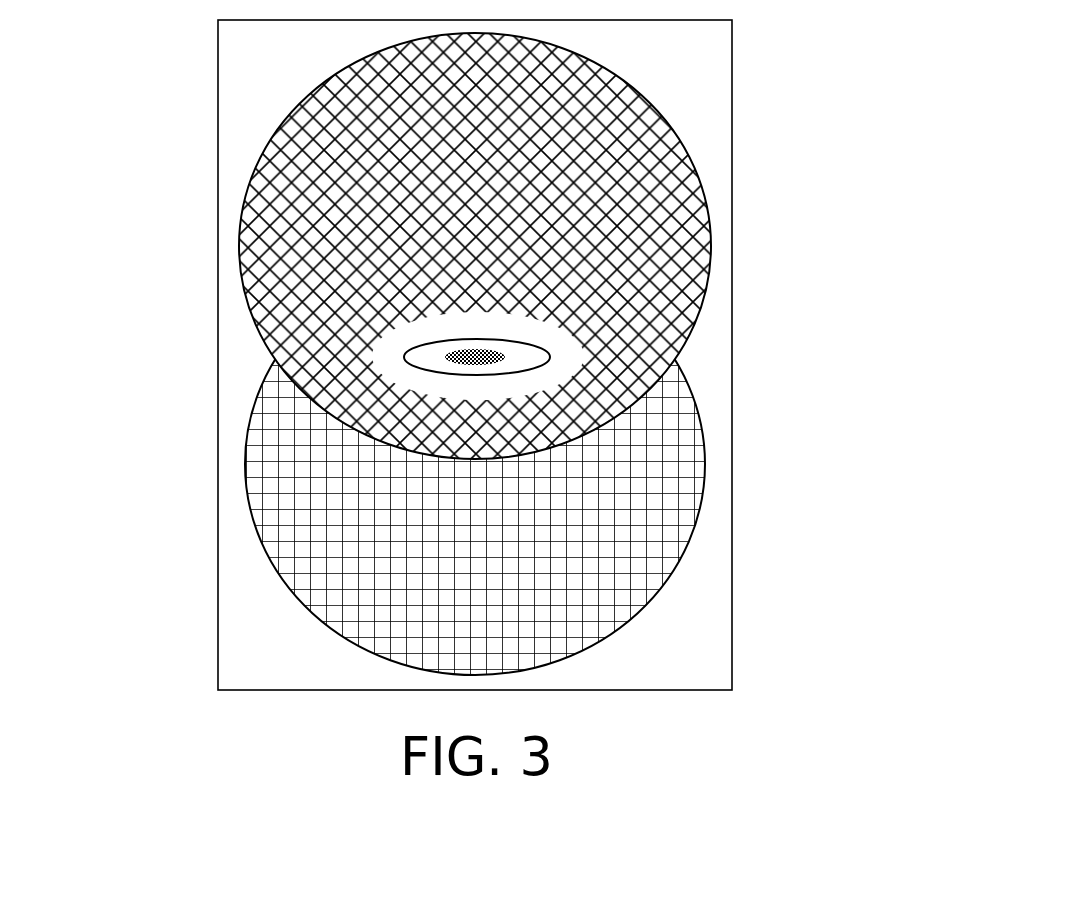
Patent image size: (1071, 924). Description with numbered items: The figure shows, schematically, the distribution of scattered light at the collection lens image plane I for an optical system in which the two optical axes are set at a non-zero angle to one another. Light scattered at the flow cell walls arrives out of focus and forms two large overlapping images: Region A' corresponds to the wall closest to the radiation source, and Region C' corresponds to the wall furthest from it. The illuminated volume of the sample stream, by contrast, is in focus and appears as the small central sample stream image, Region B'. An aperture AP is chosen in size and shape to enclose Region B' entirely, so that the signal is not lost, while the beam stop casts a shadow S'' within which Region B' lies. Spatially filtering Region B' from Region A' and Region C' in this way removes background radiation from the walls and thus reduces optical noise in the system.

The collection lens image plane I is at (703, 108).
The element Region C' is at (561, 246).
The aperture AP is at (550, 349).
The shadow S'' is at (358, 315).
The sample stream image Region B' is at (681, 380).
The element Region A' is at (367, 464).